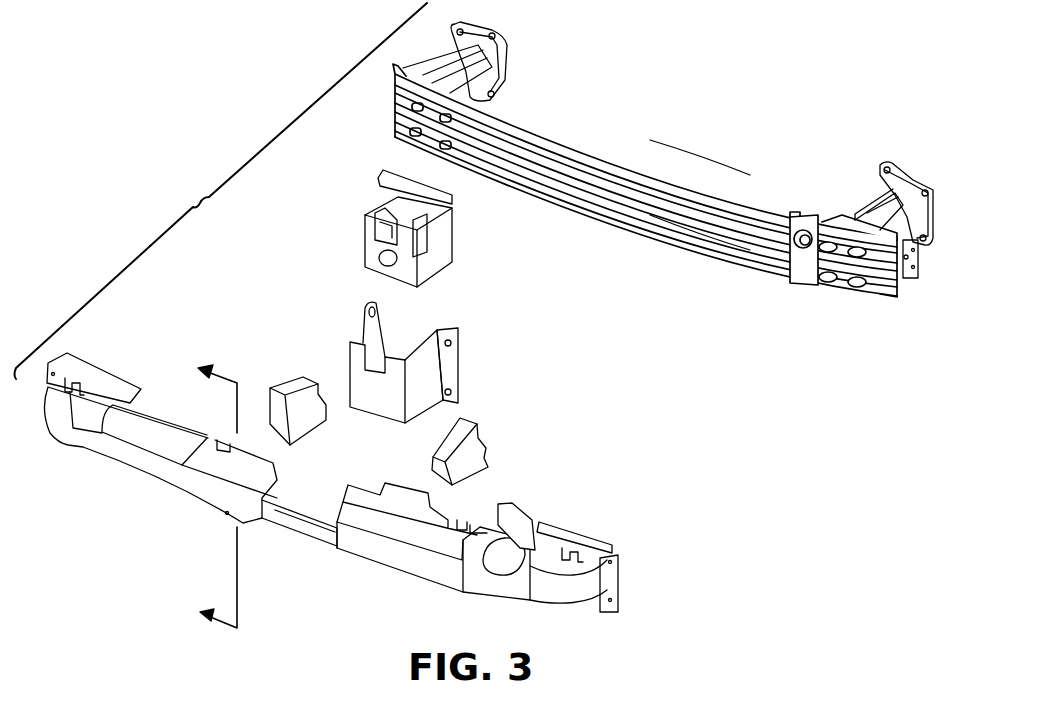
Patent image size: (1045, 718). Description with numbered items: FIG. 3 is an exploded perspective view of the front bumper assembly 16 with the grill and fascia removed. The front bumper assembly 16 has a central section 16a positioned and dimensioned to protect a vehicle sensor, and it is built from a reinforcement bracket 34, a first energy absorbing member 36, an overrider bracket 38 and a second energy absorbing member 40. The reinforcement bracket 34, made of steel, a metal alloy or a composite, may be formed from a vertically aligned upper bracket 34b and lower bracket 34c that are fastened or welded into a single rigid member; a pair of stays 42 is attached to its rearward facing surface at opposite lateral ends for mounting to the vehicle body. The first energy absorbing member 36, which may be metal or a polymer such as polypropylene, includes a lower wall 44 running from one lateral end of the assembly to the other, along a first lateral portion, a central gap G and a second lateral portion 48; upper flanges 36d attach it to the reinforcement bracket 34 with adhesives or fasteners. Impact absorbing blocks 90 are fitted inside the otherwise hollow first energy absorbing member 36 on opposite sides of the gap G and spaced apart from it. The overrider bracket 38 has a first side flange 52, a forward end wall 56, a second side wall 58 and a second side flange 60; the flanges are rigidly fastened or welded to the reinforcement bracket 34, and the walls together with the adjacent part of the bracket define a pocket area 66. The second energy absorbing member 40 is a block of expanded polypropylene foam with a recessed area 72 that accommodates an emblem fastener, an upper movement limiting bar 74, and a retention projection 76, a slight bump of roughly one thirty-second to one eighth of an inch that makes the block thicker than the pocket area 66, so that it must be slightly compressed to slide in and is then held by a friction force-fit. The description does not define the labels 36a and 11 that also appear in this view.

The front bumper assembly 16 is at (221, 191).
The central section 16a is at (303, 535).
The section line 11 is at (201, 491).
The reinforcement bracket 34 is at (594, 152).
The upper bracket 34b is at (663, 187).
The lower bracket 34c is at (697, 247).
The stays 42 is at (455, 62).
The second energy absorbing member 40 is at (421, 210).
The recessed area 72 is at (382, 212).
The upper movement limiting bar 74 is at (408, 180).
The retention projection 76 is at (443, 243).
The overrider bracket 38 is at (406, 372).
The first side flange 52 is at (352, 324).
The forward end wall 56 is at (372, 388).
The second side wall 58 is at (420, 365).
The second side flange 60 is at (447, 367).
The pocket area 66 is at (389, 314).
The impact absorbing blocks 90 is at (285, 400).
The first energy absorbing member 36 is at (331, 477).
The absorber left section 36a is at (192, 488).
The upper flanges 36d is at (118, 385).
The lower wall 44 is at (297, 517).
The second lateral portion 48 is at (430, 540).
The central gap G is at (350, 503).